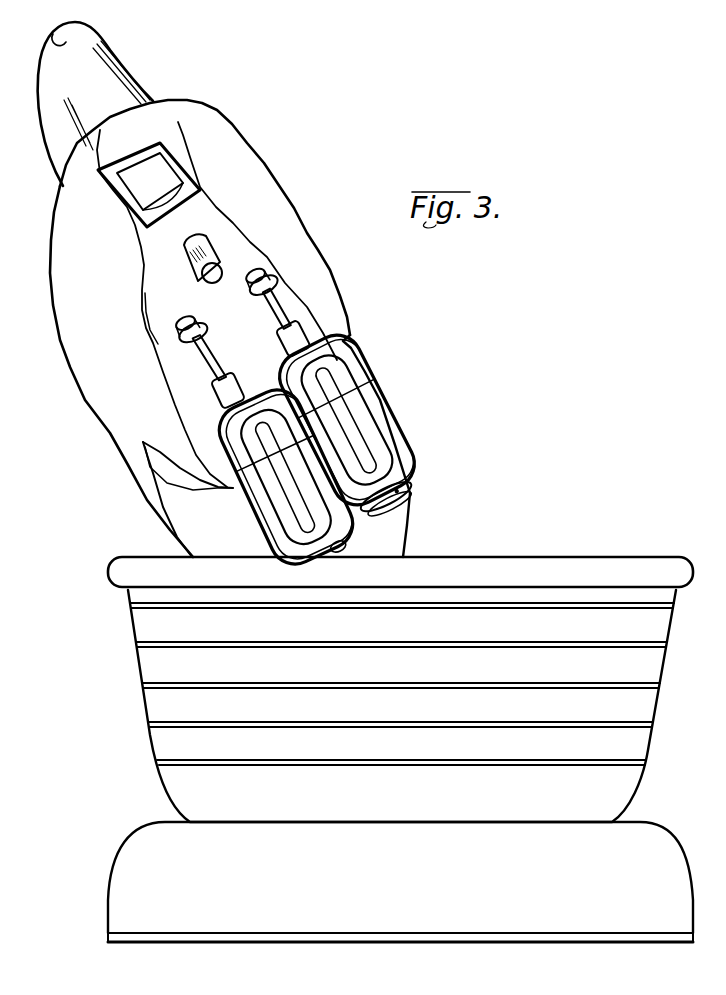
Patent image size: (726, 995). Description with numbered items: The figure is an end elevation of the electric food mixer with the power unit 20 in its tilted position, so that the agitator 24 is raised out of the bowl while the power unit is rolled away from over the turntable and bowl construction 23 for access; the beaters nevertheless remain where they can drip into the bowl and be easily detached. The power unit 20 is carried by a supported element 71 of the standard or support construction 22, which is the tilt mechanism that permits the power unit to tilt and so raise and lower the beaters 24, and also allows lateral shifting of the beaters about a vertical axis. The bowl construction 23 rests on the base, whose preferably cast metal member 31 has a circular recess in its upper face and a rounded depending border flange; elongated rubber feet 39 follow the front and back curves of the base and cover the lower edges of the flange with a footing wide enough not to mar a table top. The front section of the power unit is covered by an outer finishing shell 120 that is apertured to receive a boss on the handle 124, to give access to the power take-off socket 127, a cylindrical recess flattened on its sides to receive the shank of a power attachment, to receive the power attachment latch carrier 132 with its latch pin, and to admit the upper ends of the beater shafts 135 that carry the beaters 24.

The power unit 20 is at (335, 265).
The standard or support construction 22 is at (400, 533).
The turntable and bowl construction 23 is at (150, 737).
The agitator 24 is at (397, 405).
The cast metal member 31 is at (122, 873).
The rubber feet 39 is at (108, 938).
The supported element 71 is at (195, 532).
The outer finishing shell 120 is at (84, 356).
The handle 124 is at (107, 63).
The power take-off socket 127 is at (152, 160).
The power attachment latch carrier 132 is at (210, 240).
The beater shafts 135 is at (282, 324).